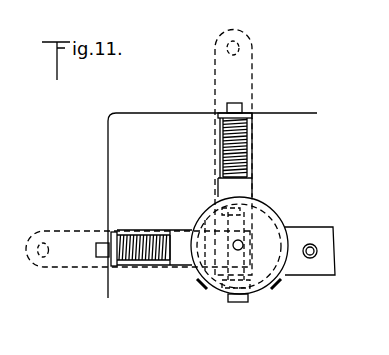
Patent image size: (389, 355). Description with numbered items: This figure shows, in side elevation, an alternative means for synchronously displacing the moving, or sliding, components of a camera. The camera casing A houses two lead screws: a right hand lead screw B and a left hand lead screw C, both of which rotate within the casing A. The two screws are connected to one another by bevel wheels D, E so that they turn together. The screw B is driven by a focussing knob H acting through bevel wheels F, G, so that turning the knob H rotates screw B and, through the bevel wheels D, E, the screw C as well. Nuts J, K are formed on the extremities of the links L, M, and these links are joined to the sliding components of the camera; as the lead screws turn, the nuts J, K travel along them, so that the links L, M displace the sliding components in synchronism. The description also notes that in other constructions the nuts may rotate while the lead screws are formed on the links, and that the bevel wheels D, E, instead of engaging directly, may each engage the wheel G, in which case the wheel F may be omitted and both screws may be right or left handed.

The camera casing A is at (107, 177).
The right hand lead screw B is at (228, 153).
The left hand lead screw C is at (157, 240).
The bevel wheel D is at (265, 215).
The bevel wheel E is at (193, 285).
The bevel wheel F is at (280, 287).
The bevel wheel G is at (278, 237).
The focussing knob H is at (198, 213).
The nut J is at (238, 190).
The nut K is at (183, 250).
The link L is at (238, 78).
The link M is at (77, 257).